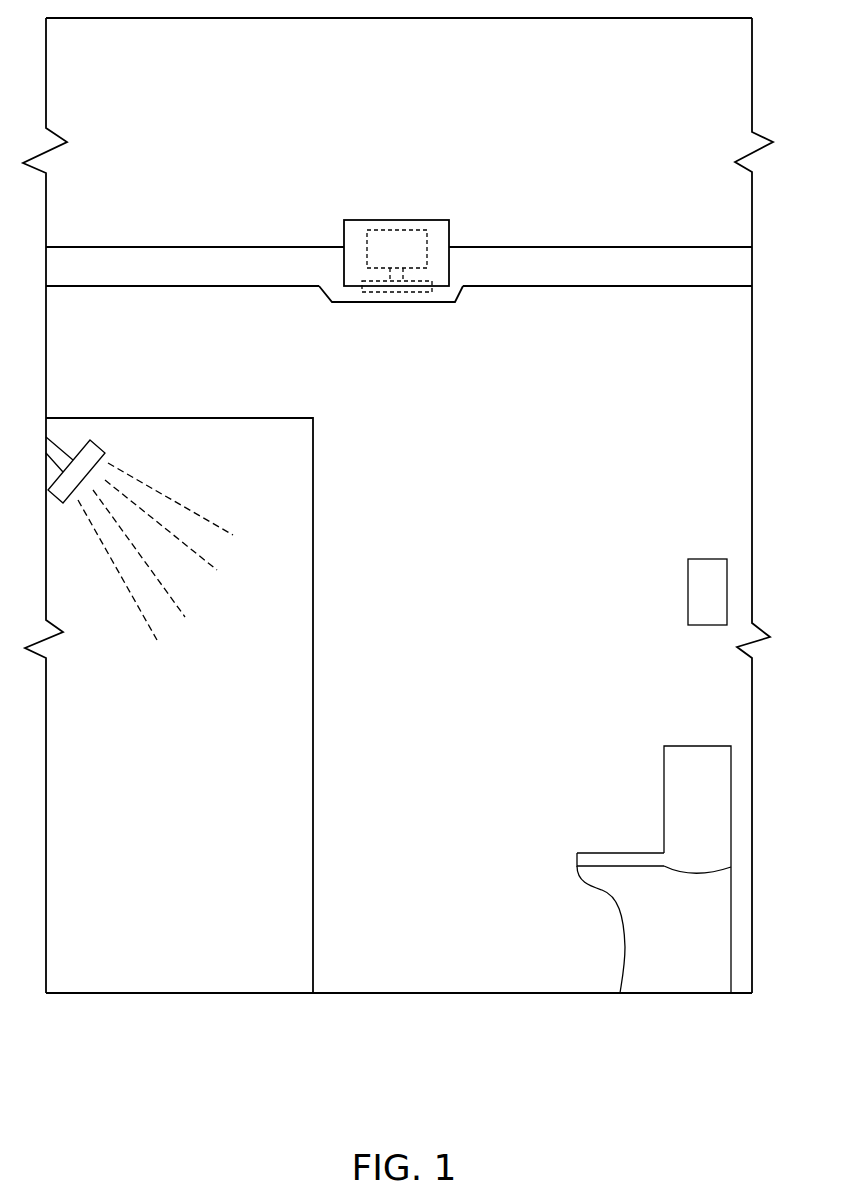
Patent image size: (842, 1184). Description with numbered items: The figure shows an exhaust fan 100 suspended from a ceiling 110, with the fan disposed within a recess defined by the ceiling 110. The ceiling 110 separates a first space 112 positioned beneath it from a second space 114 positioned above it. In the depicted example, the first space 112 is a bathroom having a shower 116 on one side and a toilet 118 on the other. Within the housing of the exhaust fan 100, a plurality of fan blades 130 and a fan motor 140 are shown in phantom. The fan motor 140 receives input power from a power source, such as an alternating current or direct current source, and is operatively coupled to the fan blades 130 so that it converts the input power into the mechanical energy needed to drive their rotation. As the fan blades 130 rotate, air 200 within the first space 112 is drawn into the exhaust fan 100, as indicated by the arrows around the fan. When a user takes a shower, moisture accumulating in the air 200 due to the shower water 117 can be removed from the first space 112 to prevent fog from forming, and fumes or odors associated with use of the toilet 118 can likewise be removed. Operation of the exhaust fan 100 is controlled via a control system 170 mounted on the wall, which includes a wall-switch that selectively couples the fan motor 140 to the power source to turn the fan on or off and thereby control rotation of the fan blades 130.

The exhaust fan 100 is at (342, 238).
The ceiling 110 is at (174, 278).
The first space 112 is at (673, 333).
The second space 114 is at (599, 126).
The shower 116 is at (151, 741).
The shower water 117 is at (178, 500).
The toilet 118 is at (681, 743).
The fan blades 130 is at (434, 288).
The fan motor 140 is at (378, 260).
The control system 170 is at (686, 589).
The air 200 is at (359, 210).